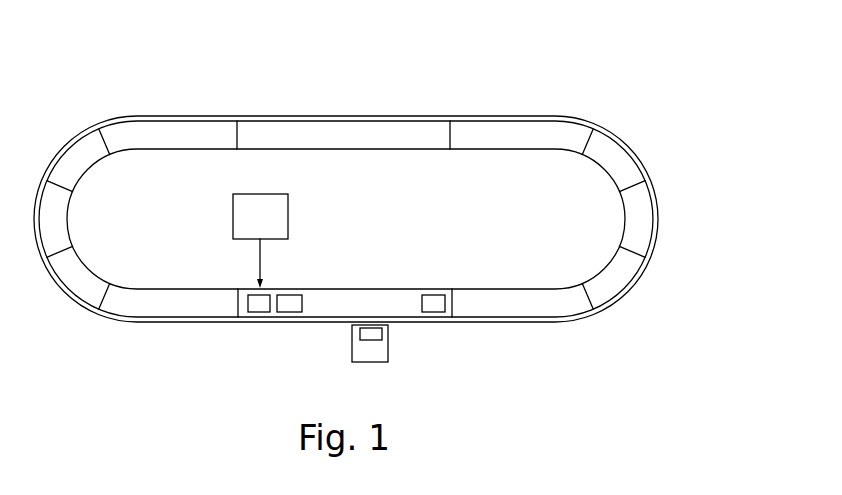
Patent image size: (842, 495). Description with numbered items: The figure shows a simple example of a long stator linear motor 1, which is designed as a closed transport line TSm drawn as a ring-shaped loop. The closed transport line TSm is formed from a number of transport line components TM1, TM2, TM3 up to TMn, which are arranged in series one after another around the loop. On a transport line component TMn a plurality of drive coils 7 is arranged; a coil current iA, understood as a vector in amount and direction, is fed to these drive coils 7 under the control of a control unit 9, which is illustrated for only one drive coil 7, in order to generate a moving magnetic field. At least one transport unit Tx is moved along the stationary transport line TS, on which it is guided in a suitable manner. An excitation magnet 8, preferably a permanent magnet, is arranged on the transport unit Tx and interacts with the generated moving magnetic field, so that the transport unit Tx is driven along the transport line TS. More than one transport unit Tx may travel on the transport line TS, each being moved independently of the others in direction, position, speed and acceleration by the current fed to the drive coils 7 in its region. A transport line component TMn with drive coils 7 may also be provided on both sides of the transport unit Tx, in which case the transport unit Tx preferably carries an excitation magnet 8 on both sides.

The long stator linear motor 1 is at (670, 112).
The drive coil 7 is at (262, 308).
The excitation magnet 8 is at (365, 337).
The control unit 9 is at (253, 221).
The transport line TS is at (160, 323).
The closed transport line TSm is at (428, 94).
The transport line component TM1 is at (332, 305).
The transport line component TM2 is at (547, 300).
The transport line component TM3 is at (297, 140).
The transport line component TMn is at (190, 140).
The transport unit Tx is at (370, 352).
The coil current iA is at (248, 263).